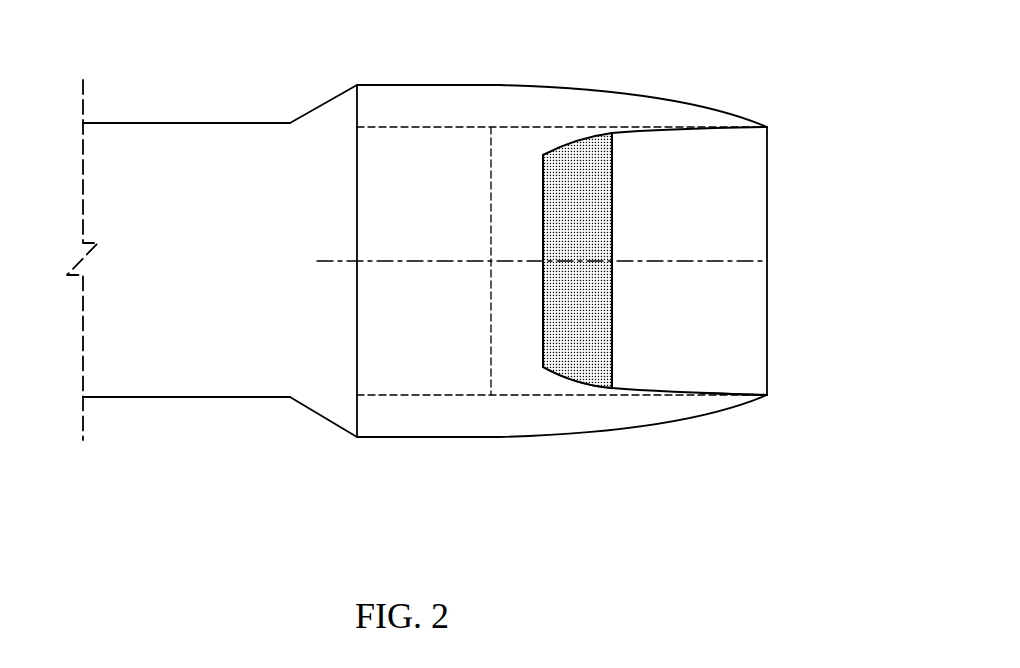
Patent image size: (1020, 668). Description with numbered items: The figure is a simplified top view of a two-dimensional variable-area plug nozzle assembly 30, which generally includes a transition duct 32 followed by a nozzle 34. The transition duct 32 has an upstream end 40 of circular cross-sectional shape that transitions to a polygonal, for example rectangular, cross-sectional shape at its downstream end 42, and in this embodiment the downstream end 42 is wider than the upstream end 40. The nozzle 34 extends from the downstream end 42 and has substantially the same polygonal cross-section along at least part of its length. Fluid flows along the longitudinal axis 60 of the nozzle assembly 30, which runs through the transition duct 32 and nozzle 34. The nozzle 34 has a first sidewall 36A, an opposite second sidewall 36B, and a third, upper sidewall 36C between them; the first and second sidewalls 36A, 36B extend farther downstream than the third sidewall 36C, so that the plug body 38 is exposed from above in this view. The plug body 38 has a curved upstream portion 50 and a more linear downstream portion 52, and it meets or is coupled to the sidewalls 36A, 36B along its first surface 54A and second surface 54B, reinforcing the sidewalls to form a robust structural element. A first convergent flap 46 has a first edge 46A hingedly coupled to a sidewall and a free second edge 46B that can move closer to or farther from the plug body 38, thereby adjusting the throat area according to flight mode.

The 2D VAP nozzle assembly 30 is at (790, 128).
The transition duct 32 is at (177, 362).
The nozzle 34 is at (775, 198).
The first sidewall 36A is at (602, 102).
The second sidewall 36B is at (595, 423).
The third sidewall 36C is at (517, 373).
The plug body 38 is at (738, 337).
The upstream end 40 is at (122, 123).
The downstream end 42 is at (322, 105).
The first convergent flap 46 is at (594, 325).
The first edge 46A is at (542, 188).
The second edge 46B is at (612, 183).
The upstream portion 50 is at (560, 378).
The downstream portion 52 is at (733, 400).
The first surface 54A is at (684, 128).
The second surface 54B is at (668, 385).
The longitudinal axis 60 is at (330, 263).